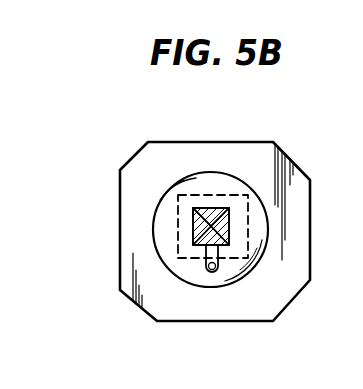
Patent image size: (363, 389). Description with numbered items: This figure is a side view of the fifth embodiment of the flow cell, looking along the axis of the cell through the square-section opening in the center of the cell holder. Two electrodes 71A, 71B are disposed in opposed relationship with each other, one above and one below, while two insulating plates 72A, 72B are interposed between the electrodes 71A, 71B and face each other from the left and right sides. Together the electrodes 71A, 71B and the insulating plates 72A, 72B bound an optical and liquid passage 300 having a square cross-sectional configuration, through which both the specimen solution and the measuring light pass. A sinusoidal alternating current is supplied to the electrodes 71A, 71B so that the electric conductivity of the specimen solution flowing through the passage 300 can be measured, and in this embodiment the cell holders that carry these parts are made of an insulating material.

The electrode 71A is at (205, 208).
The optical and liquid passage 300 is at (216, 209).
The insulating plate 72B is at (230, 218).
The insulating plate 72A is at (193, 227).
The electrode 71B is at (203, 253).